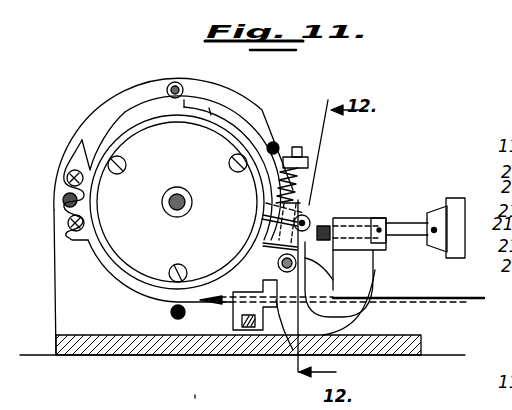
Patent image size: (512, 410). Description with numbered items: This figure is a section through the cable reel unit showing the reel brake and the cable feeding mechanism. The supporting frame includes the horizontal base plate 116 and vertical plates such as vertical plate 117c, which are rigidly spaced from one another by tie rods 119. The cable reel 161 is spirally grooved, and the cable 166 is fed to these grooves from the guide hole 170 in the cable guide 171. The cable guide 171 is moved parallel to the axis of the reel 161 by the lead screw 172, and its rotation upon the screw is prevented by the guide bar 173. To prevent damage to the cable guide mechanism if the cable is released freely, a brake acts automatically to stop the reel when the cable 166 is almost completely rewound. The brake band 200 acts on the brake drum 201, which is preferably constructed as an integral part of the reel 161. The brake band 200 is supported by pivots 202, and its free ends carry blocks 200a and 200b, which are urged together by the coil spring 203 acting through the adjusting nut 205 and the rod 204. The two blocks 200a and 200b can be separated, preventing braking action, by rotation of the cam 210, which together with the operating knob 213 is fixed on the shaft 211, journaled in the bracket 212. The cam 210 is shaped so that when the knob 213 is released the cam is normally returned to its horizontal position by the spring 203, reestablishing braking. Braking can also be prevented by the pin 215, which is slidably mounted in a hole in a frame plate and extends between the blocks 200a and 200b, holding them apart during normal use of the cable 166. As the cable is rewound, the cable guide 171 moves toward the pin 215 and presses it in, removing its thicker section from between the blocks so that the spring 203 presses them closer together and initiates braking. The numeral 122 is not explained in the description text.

The cable reel 161 is at (140, 78).
The tie rods 119 is at (178, 82).
The brake band 200 is at (186, 100).
The brake drum 201 is at (213, 113).
The rod 204 is at (292, 150).
The adjusting nut 205 is at (306, 168).
The coil spring 203 is at (310, 188).
The pin 215 is at (322, 205).
The block 200a is at (330, 215).
The cam 210 is at (380, 246).
The shaft 211 is at (412, 200).
The operating knob 213 is at (462, 208).
The block 200b is at (374, 262).
The lead screw 172 is at (336, 275).
The bracket 212 is at (373, 286).
The cable guide 171 is at (358, 312).
The cable 166 is at (449, 300).
The base plate 116 is at (423, 345).
The guide hole 170 is at (282, 340).
The guide bar 173 is at (249, 340).
The vertical plate 117c is at (73, 268).
The pivots 202 is at (70, 172).
The base plate 122 is at (203, 402).